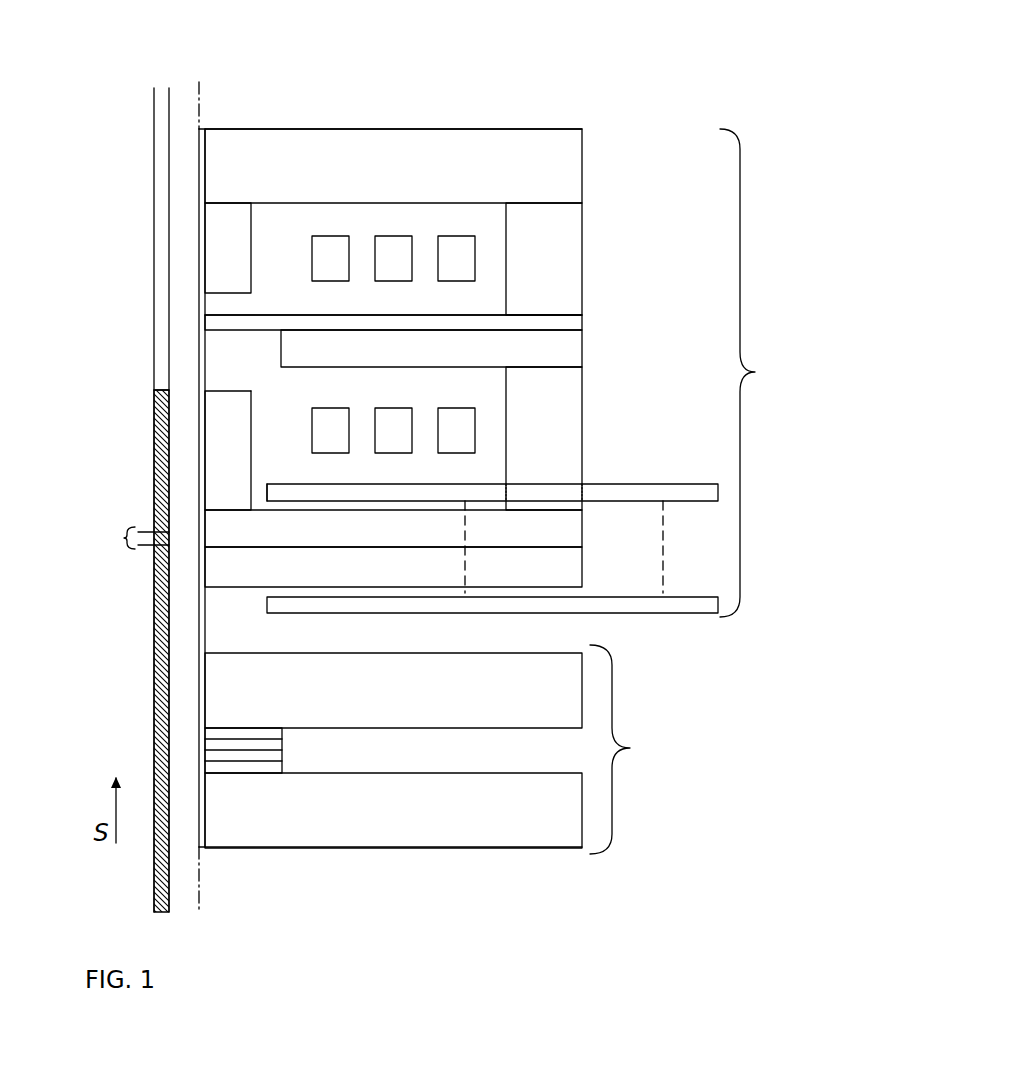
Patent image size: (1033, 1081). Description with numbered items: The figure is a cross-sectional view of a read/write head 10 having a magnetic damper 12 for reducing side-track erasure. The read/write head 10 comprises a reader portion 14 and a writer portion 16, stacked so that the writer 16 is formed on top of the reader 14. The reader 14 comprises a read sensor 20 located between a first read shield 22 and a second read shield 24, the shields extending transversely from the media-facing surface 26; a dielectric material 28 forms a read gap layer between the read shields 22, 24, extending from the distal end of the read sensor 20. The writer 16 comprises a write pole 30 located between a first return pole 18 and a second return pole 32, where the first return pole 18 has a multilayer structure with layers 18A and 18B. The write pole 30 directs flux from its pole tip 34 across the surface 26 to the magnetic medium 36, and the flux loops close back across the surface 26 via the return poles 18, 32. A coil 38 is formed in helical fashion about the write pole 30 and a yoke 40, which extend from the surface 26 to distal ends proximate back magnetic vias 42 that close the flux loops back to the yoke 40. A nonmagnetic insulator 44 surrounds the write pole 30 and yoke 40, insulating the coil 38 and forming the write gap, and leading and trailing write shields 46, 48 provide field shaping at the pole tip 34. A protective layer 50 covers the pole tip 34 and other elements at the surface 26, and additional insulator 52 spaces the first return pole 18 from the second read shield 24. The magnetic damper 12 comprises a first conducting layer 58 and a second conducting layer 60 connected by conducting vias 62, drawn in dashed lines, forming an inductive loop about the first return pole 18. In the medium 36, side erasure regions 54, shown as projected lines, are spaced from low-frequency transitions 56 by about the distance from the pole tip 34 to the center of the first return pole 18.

The read/write head 10 is at (640, 70).
The magnetic damper 12 is at (618, 475).
The reader portion 14 is at (435, 749).
The writer portion 16 is at (447, 414).
The first return pole 18 is at (341, 604).
The layer of first return pole 18A is at (324, 544).
The layer of first return pole 18B is at (390, 583).
The read sensor 20 is at (282, 755).
The first read shield 22 is at (378, 824).
The second read shield 24 is at (378, 703).
The external surface 26 is at (201, 78).
The dielectric material 28 is at (474, 760).
The write pole 30 is at (387, 325).
The second return pole 32 is at (378, 178).
The pole tip 34 is at (205, 322).
The magnetic medium 36 is at (154, 117).
The coil 38 is at (327, 250).
The yoke 40 is at (419, 363).
The back magnetic vias 42 is at (529, 275).
The nonmagnetic insulator 44 is at (264, 298).
The leading write shield 46 is at (214, 464).
The trailing write shield 48 is at (214, 262).
The protective layer 50 is at (201, 127).
The insulator 52 is at (314, 643).
The side erasure regions 54 is at (122, 536).
The low-frequency transitions 56 is at (140, 381).
The first conducting layer 58 is at (400, 605).
The second conducting layer 60 is at (302, 493).
The conducting vias 62 is at (625, 562).